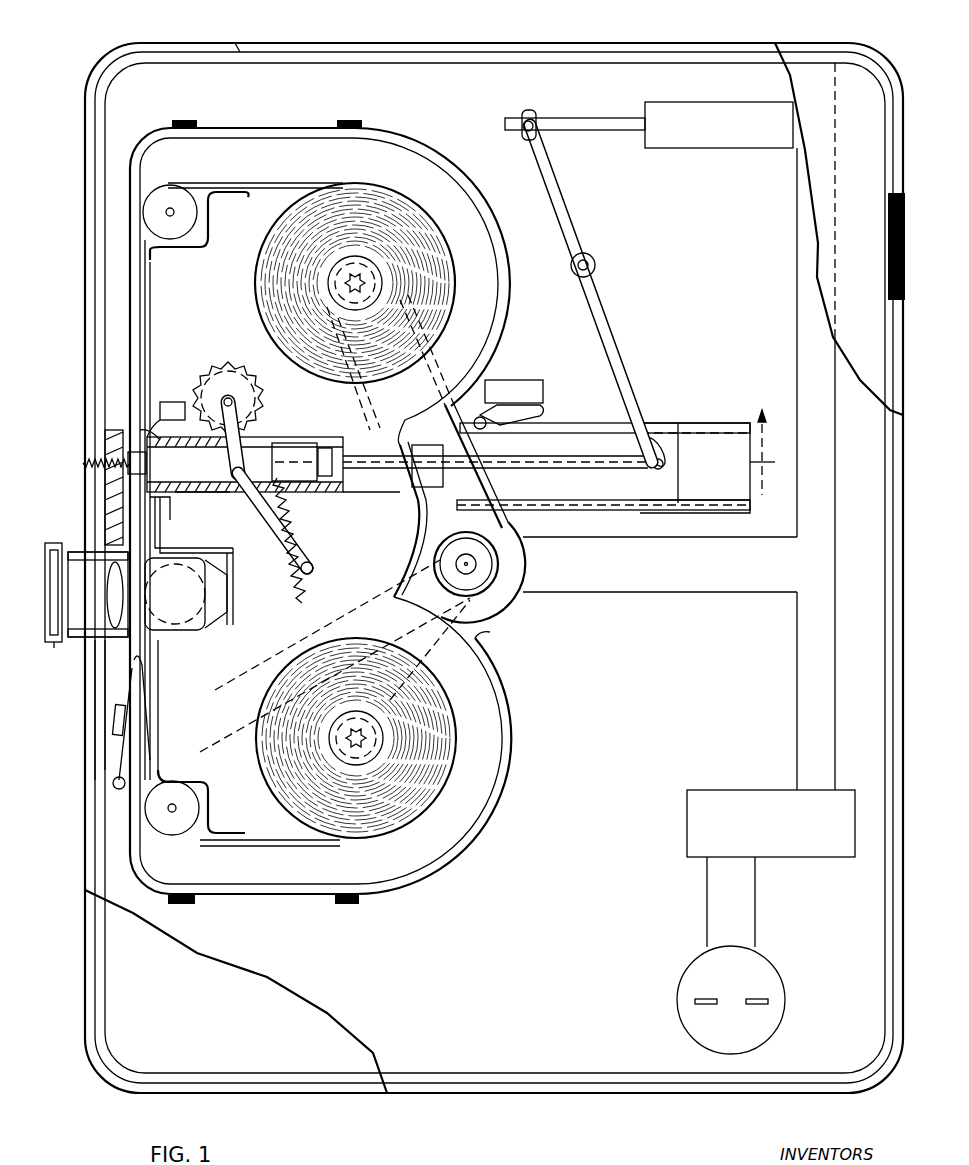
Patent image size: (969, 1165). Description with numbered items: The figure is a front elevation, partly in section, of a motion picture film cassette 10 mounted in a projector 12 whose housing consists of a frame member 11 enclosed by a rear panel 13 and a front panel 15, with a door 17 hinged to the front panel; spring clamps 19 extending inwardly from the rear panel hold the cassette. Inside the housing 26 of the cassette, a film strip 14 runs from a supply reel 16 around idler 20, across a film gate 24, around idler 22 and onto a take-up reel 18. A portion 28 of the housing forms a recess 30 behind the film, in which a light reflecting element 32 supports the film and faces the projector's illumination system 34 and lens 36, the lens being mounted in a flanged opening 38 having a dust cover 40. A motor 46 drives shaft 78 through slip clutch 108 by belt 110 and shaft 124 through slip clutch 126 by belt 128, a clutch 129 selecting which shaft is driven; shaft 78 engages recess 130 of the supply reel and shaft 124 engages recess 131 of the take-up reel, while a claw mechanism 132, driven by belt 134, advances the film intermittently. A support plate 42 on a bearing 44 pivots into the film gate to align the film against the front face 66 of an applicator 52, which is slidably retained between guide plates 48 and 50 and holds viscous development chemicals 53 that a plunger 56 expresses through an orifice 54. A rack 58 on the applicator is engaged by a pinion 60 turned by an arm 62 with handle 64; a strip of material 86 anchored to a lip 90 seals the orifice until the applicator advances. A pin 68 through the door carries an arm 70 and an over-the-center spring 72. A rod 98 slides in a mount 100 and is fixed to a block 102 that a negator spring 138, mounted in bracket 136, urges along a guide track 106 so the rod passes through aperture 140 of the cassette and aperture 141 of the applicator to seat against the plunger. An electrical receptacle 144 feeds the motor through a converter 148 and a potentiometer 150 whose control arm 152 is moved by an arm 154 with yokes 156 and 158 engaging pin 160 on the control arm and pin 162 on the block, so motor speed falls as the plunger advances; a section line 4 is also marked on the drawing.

The section line 4 is at (764, 451).
The motion picture film cassette 10 is at (498, 217).
The frame member 11 is at (95, 258).
The projector 12 is at (678, 35).
The rear panel 13 is at (508, 987).
The film strip 14 is at (438, 247).
The front panel 15 is at (235, 48).
The supply reel 16 is at (370, 270).
The door 17 is at (850, 72).
The take-up reel 18 is at (367, 768).
The spring clamps 19 is at (190, 118).
The idler 20 is at (182, 195).
The idler 22 is at (198, 810).
The film gate 24 is at (112, 430).
The housing 26 is at (132, 300).
The portion of the cassette housing 28 is at (170, 550).
The recess 30 is at (234, 560).
The light reflecting element 32 is at (187, 603).
The illumination system 34 is at (215, 600).
The lens 36 is at (108, 603).
The flanged opening 38 is at (75, 545).
The dust cover 40 is at (54, 644).
The support plate 42 is at (152, 500).
The bearing 44 is at (125, 468).
The motor 46 is at (512, 603).
The guide plate 48 is at (340, 452).
The guide plate 50 is at (325, 492).
The applicator 52 is at (225, 494).
The viscous development chemicals 53 is at (292, 443).
The orifice 54 is at (172, 400).
The plunger 56 is at (325, 445).
The rack 58 is at (218, 372).
The pinion 60 is at (230, 365).
The arm 62 is at (245, 405).
The handle 64 is at (240, 480).
The front face 66 is at (160, 470).
The pin 68 is at (315, 570).
The arm 70 is at (300, 545).
The over-the-center spring 72 is at (292, 595).
The shaft 78 is at (312, 296).
The strip of material 86 is at (140, 430).
The lip 90 is at (160, 402).
The rod 98 is at (368, 494).
The mount 100 is at (415, 483).
The block 102 is at (600, 488).
The guide track 106 is at (735, 420).
The slip clutch 108 is at (430, 283).
The belt 110 is at (485, 497).
The shaft 124 is at (385, 735).
The slip clutch 126 is at (380, 735).
The belt 128 is at (483, 637).
The clutch 129 is at (490, 572).
The recess 130 is at (361, 368).
The recess 131 is at (355, 760).
The claw mechanism 132 is at (126, 692).
The belt 134 is at (225, 742).
The bracket 136 is at (500, 410).
The negator spring 138 is at (563, 430).
The aperture 140 is at (430, 455).
The aperture 141 is at (395, 435).
The electrical receptacle 144 is at (680, 980).
The converter 148 is at (723, 792).
The potentiometer 150 is at (730, 148).
The control arm 152 is at (605, 116).
The arm 154 is at (607, 310).
The yoke 156 is at (538, 112).
The yoke 158 is at (662, 448).
The pin 160 is at (525, 112).
The pin 162 is at (663, 465).